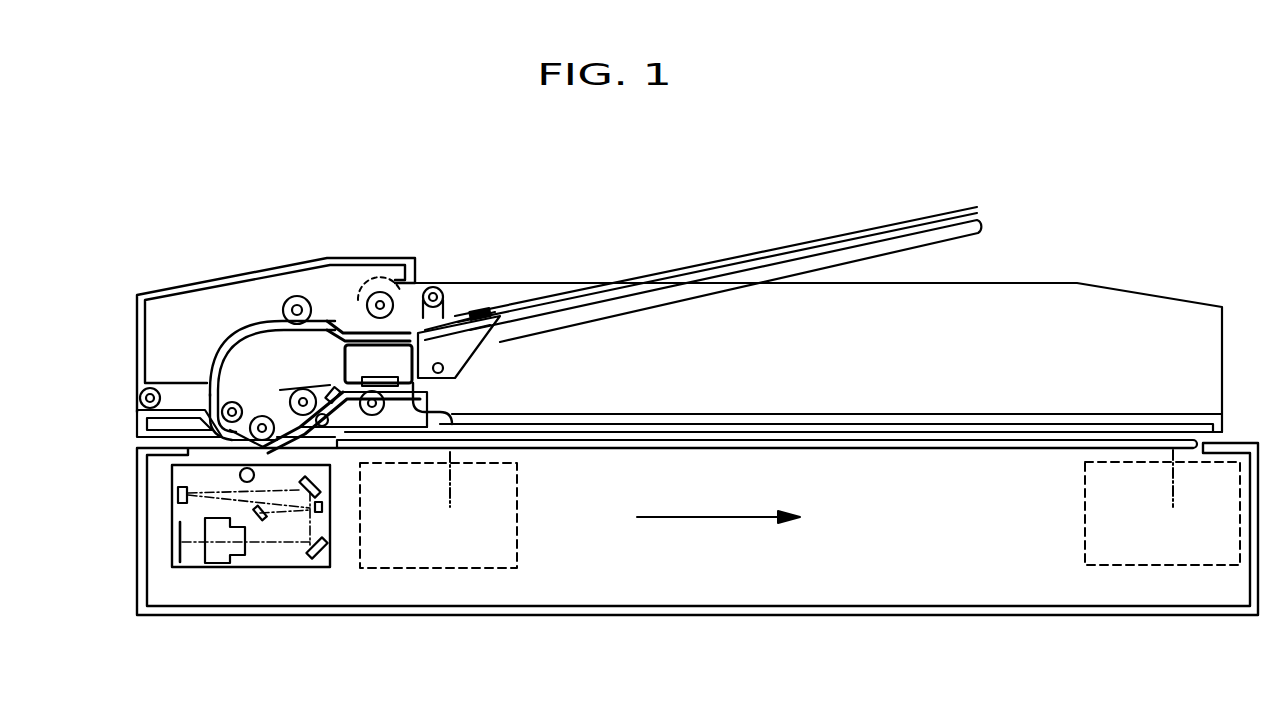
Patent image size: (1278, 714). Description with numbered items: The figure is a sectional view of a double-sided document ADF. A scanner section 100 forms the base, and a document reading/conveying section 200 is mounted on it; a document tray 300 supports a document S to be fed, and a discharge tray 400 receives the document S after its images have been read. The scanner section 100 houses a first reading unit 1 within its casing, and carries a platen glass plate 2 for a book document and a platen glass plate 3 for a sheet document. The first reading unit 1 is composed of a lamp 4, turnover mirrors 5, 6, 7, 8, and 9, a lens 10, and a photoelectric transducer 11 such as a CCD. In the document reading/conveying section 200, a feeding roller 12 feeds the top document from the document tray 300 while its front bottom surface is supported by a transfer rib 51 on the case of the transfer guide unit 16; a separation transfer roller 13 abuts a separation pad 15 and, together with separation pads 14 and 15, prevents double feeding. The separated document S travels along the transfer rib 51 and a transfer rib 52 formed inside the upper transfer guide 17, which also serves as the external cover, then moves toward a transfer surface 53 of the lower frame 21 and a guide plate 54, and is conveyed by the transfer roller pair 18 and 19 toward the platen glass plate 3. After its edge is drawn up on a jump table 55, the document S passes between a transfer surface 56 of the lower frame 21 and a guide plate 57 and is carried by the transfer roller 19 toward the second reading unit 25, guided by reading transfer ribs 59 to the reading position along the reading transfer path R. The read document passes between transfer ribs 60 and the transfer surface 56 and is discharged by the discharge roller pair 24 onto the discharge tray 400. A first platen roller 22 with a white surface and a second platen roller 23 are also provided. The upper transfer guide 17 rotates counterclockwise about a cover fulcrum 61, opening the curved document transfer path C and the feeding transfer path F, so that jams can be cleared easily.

The first reading unit 1 is at (244, 565).
The platen glass plate for a book document 2 is at (748, 441).
The platen glass plate for a sheet document 3 is at (217, 462).
The lamp 4 is at (248, 483).
The turnover mirror 5 is at (265, 518).
The turnover mirror 6 is at (325, 450).
The turnover mirror 7 is at (183, 517).
The turnover mirror 8 is at (345, 440).
The turnover mirror 9 is at (322, 553).
The lens 10 is at (213, 565).
The photoelectric transducer 11 is at (176, 567).
The feeding roller 12 is at (428, 276).
The separation transfer roller 13 is at (296, 296).
The separation pad 14 is at (350, 328).
The separation pad 15 is at (300, 328).
The transfer guide unit 16 is at (480, 312).
The upper transfer guide 17 is at (205, 400).
The transfer roller 18 is at (212, 378).
The transfer roller 19 is at (425, 430).
The lower frame 21 is at (137, 420).
The first platen roller 22 is at (228, 431).
The second platen roller 23 is at (382, 414).
The discharge roller pair 24 is at (447, 404).
The second reading unit 25 is at (458, 338).
The transfer rib 51 is at (463, 326).
The transfer rib 52 is at (225, 345).
The transfer surface 53 is at (140, 451).
The guide plate 54 is at (213, 405).
The jump table 55 is at (385, 438).
The transfer surface 56 is at (342, 400).
The guide plate 57 is at (225, 400).
The reading transfer ribs 59 is at (252, 330).
The transfer ribs 60 is at (457, 366).
The cover fulcrum 61 is at (138, 397).
The scanner section 100 is at (137, 617).
The document reading/conveying section 200 is at (320, 256).
The document tray 300 is at (907, 246).
The discharge tray 400 is at (820, 414).
The curved document transfer path C is at (220, 322).
The feeding transfer path F is at (360, 325).
The reading transfer path R is at (430, 421).
The document S is at (701, 259).